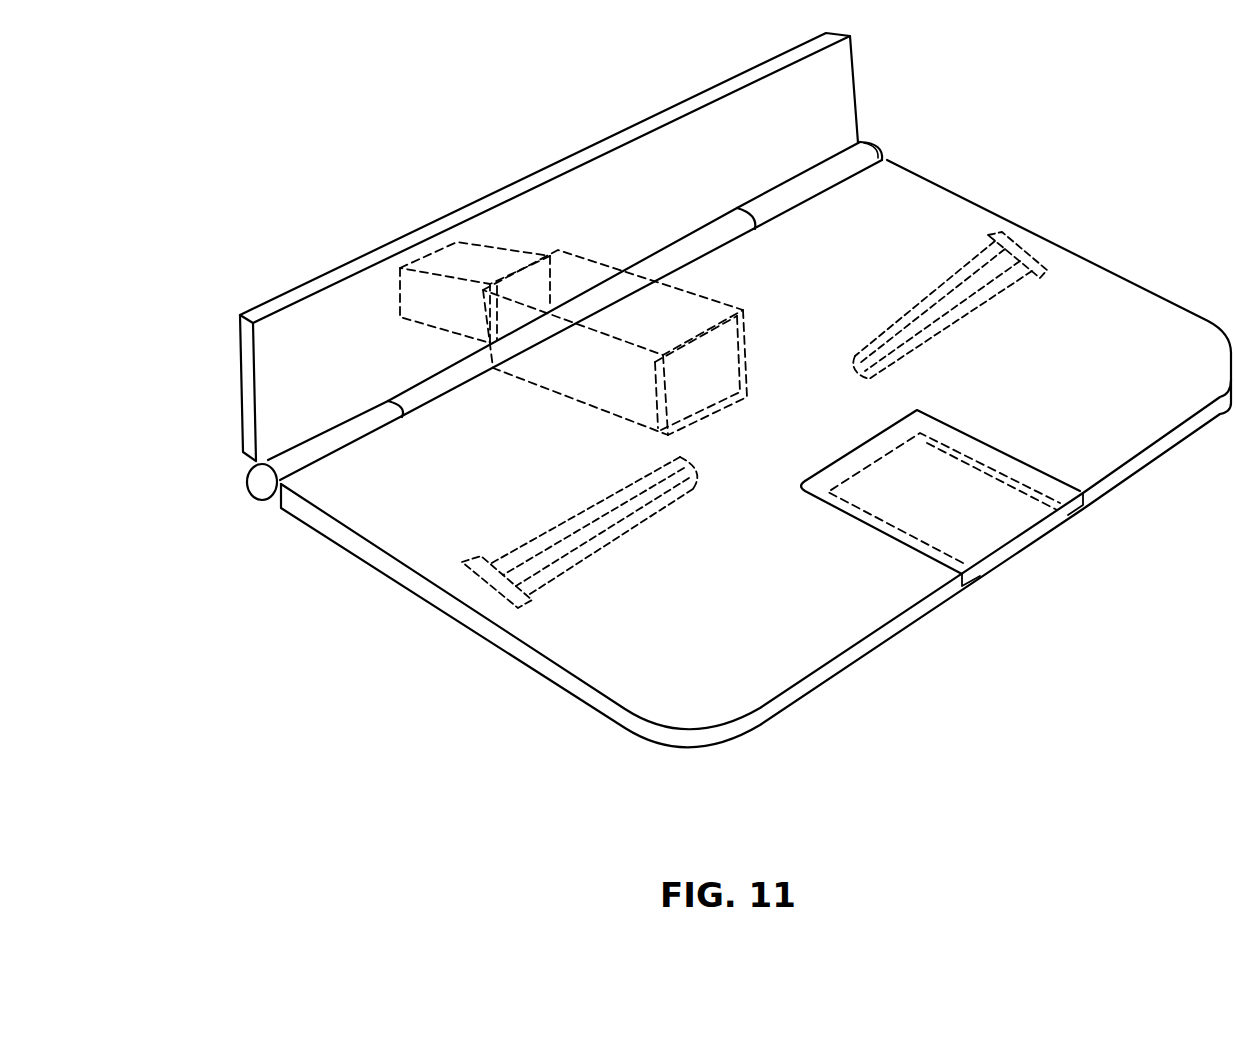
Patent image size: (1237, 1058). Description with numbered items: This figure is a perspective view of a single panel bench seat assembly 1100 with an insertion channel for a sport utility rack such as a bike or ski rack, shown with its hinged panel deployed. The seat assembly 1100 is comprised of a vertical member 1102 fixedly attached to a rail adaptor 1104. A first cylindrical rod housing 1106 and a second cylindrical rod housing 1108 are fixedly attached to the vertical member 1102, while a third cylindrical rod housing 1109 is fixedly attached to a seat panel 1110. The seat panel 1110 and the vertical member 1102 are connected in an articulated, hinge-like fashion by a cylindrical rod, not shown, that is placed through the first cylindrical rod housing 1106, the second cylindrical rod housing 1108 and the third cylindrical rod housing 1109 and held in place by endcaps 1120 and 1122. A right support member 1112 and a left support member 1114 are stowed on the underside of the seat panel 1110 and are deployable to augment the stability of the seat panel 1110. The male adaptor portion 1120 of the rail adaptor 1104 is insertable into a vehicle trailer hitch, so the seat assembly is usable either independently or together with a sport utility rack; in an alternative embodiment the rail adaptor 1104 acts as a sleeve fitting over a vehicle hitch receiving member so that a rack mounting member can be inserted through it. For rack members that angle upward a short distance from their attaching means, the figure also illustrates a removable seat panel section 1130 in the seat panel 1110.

The seat assembly 1100 is at (296, 163).
The vertical member 1102 is at (355, 272).
The rail adaptor 1104 is at (745, 318).
The first cylindrical rod housing 1106 is at (342, 437).
The second cylindrical rod housing 1108 is at (827, 173).
The third cylindrical rod housing 1109 is at (688, 250).
The seat panel 1110 is at (768, 715).
The right support member 1112 is at (958, 300).
The left support member 1114 is at (633, 530).
The endcap 1120 is at (478, 268).
The endcap 1122 is at (881, 152).
The removable seat panel section 1130 is at (1013, 550).